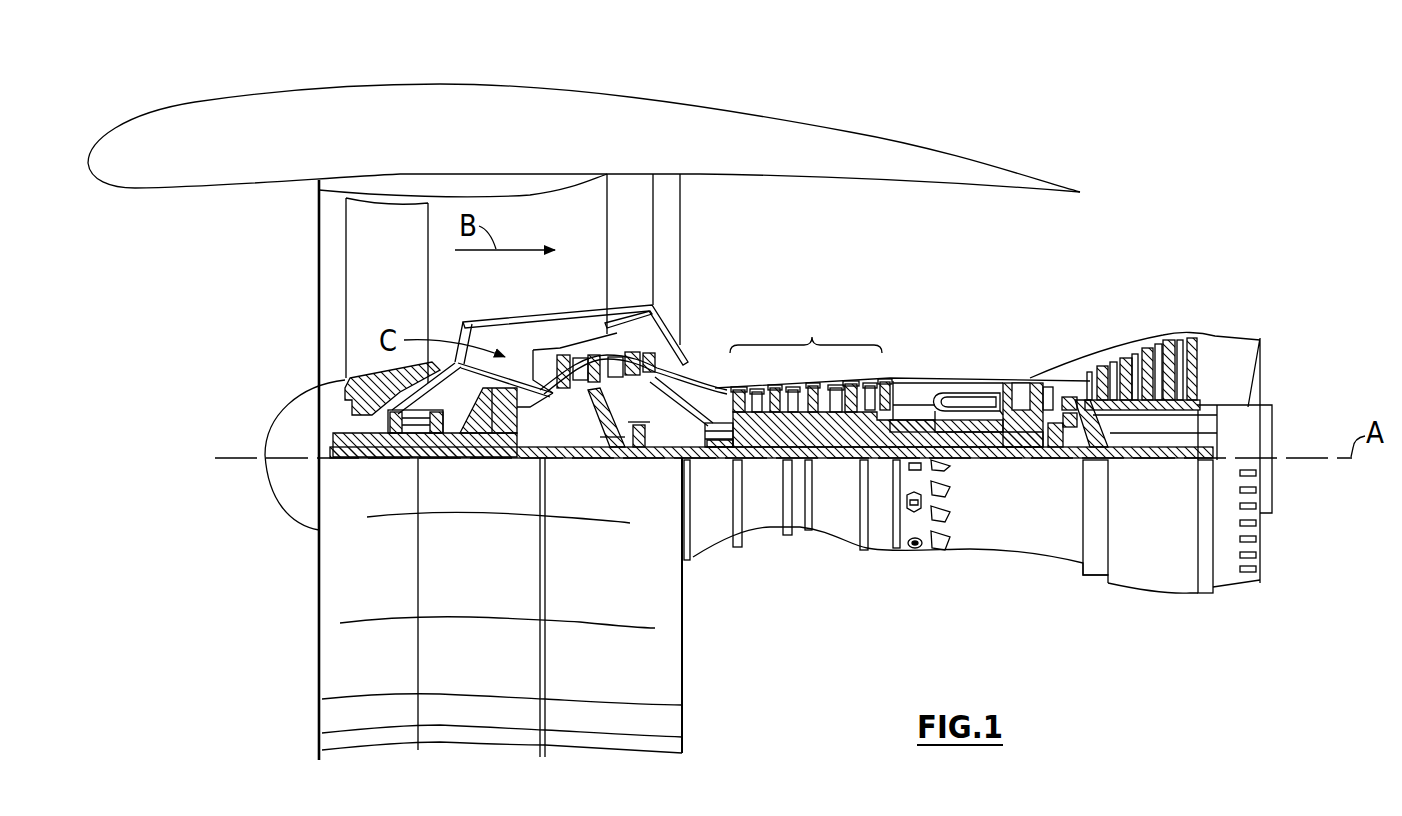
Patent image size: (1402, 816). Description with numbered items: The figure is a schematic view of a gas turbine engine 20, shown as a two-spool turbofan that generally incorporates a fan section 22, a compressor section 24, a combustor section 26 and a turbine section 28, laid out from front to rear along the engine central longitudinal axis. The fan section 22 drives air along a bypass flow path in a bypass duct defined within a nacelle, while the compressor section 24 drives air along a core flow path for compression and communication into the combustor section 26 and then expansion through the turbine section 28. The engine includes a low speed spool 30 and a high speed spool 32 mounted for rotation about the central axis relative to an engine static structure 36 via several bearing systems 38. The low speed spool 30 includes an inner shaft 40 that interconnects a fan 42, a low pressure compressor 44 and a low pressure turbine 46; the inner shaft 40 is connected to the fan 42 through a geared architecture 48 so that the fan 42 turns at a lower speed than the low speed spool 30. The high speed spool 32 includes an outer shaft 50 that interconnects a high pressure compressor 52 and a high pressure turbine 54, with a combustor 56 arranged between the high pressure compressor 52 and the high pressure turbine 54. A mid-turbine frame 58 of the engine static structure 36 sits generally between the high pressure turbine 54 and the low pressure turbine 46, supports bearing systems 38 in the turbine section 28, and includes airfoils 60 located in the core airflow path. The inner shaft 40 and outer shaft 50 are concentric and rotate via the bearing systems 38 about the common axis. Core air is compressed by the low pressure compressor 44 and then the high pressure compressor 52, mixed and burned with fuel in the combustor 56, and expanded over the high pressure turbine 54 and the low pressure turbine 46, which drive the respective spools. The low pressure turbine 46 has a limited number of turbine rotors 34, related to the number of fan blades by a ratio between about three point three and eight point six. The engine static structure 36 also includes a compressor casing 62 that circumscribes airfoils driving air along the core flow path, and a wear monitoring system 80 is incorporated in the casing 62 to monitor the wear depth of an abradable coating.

The gas turbine engine 20 is at (1148, 190).
The fan section 22 is at (565, 78).
The compressor section 24 is at (908, 278).
The combustor section 26 is at (912, 278).
The turbine section 28 is at (1018, 278).
The low speed spool 30 is at (839, 468).
The high speed spool 32 is at (876, 423).
The turbine rotors 34 is at (1182, 422).
The engine static structure 36 is at (878, 549).
The bearing systems 38 is at (394, 452).
The inner shaft 40 is at (700, 462).
The fan 42 is at (373, 306).
The low pressure compressor 44 is at (617, 360).
The low pressure turbine 46 is at (1147, 340).
The geared architecture 48 is at (505, 442).
The outer shaft 50 is at (967, 440).
The high pressure compressor 52 is at (822, 410).
The high pressure turbine 54 is at (1017, 383).
The combustor 56 is at (955, 400).
The mid-turbine frame 58 is at (1062, 365).
The airfoils 60 is at (1082, 405).
The compressor casing 62 is at (785, 338).
The wear monitoring system 80 is at (812, 337).